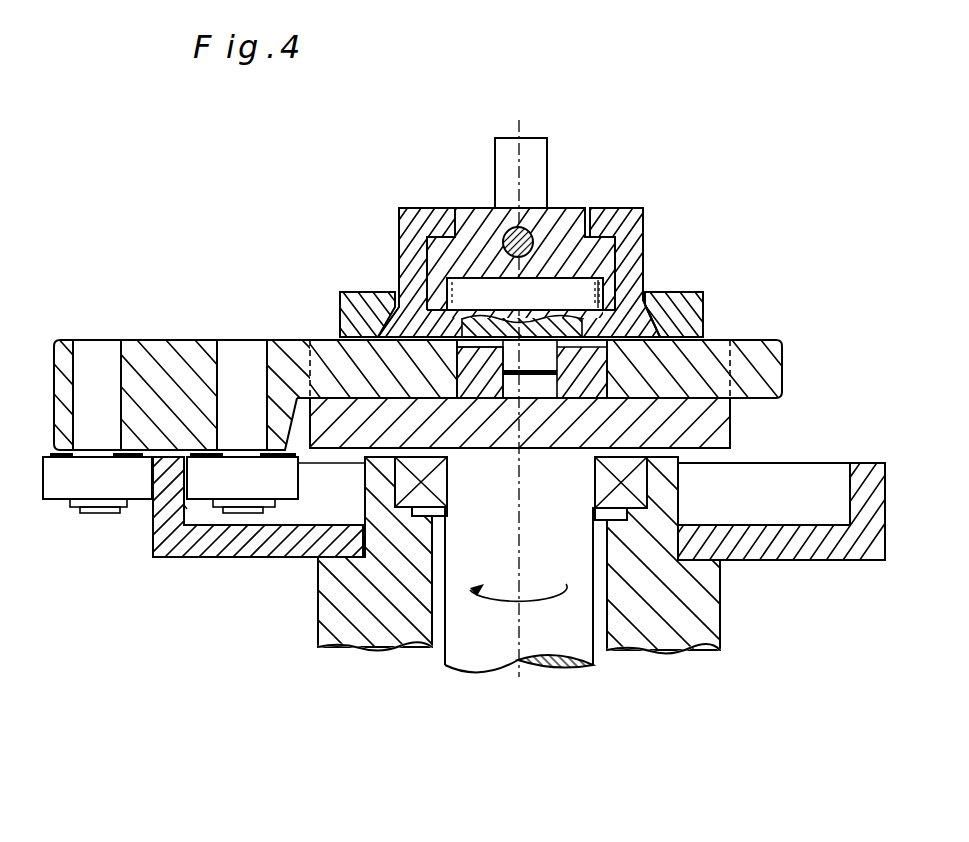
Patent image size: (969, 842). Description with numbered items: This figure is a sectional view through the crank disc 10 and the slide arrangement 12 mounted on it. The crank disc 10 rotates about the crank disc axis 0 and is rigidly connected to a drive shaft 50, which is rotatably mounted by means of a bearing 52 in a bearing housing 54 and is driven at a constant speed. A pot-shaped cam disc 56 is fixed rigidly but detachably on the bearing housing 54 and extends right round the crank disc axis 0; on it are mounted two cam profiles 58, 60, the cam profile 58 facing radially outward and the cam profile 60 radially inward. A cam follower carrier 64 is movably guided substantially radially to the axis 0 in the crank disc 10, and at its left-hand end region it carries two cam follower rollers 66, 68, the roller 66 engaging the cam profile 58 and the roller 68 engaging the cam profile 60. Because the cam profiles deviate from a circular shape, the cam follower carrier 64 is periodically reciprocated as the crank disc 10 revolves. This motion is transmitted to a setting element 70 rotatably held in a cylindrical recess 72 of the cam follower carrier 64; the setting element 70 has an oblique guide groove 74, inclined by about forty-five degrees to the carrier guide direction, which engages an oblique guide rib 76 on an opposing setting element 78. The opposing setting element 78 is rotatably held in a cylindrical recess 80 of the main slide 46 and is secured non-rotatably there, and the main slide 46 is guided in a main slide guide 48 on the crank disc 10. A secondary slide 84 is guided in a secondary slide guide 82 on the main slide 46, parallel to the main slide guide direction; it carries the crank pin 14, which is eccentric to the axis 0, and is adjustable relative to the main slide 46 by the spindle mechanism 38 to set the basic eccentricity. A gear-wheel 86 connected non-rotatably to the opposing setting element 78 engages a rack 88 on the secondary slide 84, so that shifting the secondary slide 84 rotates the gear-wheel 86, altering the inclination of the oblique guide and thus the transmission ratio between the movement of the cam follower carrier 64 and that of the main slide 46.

The crank disc axis 0 is at (518, 647).
The crank disc 10 is at (731, 432).
The slide arrangement 12 is at (700, 188).
The crank pin 14 is at (537, 152).
The spindle mechanism 38 is at (534, 233).
The main slide 46 is at (400, 277).
The main slide guide 48 is at (340, 295).
The drive shaft 50 is at (553, 645).
The bearing 52 is at (638, 485).
The bearing housing 54 is at (668, 650).
The pot-shaped cam disc 56 is at (785, 562).
The cam profile 58 is at (150, 537).
The cam profile 60 is at (187, 507).
The cam follower carrier 64 is at (170, 340).
The cam follower roller 66 is at (57, 487).
The cam follower roller 68 is at (283, 480).
The setting element 70 is at (543, 360).
The cylindrical recess 72 is at (608, 380).
The oblique guide groove 74 is at (505, 370).
The oblique guide rib 76 is at (547, 377).
The opposing setting element 78 is at (660, 336).
The cylindrical recess 80 is at (400, 222).
The secondary slide guide 82 is at (617, 226).
The secondary slide 84 is at (475, 223).
The gear-wheel 86 is at (465, 290).
The rack 88 is at (608, 300).